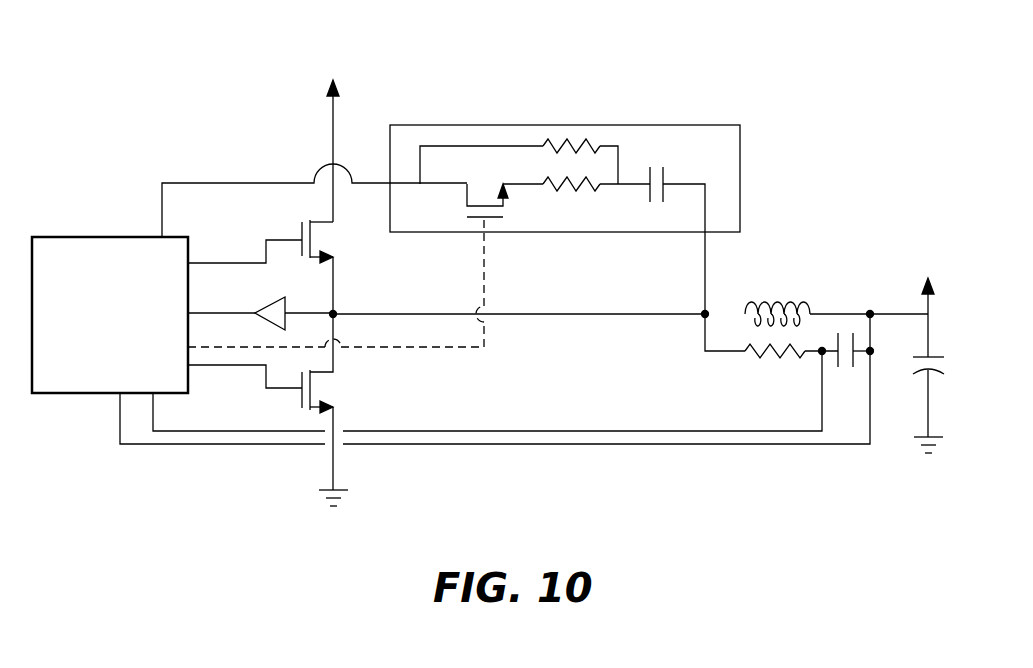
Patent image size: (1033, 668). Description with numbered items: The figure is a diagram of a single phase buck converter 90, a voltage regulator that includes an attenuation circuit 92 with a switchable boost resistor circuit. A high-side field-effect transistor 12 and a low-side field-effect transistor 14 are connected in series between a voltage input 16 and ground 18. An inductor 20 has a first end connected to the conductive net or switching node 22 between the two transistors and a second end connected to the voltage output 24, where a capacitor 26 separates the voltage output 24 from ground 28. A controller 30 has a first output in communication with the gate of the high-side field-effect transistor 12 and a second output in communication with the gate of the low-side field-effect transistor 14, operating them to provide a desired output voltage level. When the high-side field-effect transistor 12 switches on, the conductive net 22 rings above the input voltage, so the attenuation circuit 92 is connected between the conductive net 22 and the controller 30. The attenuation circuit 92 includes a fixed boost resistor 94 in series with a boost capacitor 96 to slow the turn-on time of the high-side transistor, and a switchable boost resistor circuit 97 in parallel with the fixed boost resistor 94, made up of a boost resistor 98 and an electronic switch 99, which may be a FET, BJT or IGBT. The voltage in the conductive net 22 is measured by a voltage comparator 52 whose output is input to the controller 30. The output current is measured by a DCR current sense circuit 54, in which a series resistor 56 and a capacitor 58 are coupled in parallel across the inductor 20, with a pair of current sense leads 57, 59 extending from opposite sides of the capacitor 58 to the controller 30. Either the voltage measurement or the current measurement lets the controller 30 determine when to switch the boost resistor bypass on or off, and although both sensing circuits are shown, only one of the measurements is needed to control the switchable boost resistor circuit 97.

The single phase buck converter 90 is at (226, 108).
The controller 30 is at (98, 339).
The voltage input 16 is at (348, 70).
The high-side field-effect transistor 12 is at (300, 226).
The low-side field-effect transistor 14 is at (299, 401).
The voltage comparator 52 is at (260, 310).
The conductive net or switching node 22 is at (382, 311).
The ground 18 is at (348, 490).
The attenuation circuit 92 is at (662, 124).
The fixed boost resistor 94 is at (585, 134).
The boost capacitor 96 is at (666, 172).
The boost resistor 98 is at (580, 187).
The electronic switch 99 is at (464, 193).
The switchable boost resistor circuit 97 is at (528, 200).
The inductor 20 is at (784, 302).
The series resistor 56 is at (779, 359).
The capacitor 58 is at (856, 368).
The current sense lead 57 is at (572, 430).
The current sense lead 59 is at (572, 448).
The DCR current sense circuit 54 is at (828, 460).
The voltage output 24 is at (932, 258).
The capacitor 26 is at (922, 370).
The ground 28 is at (919, 443).